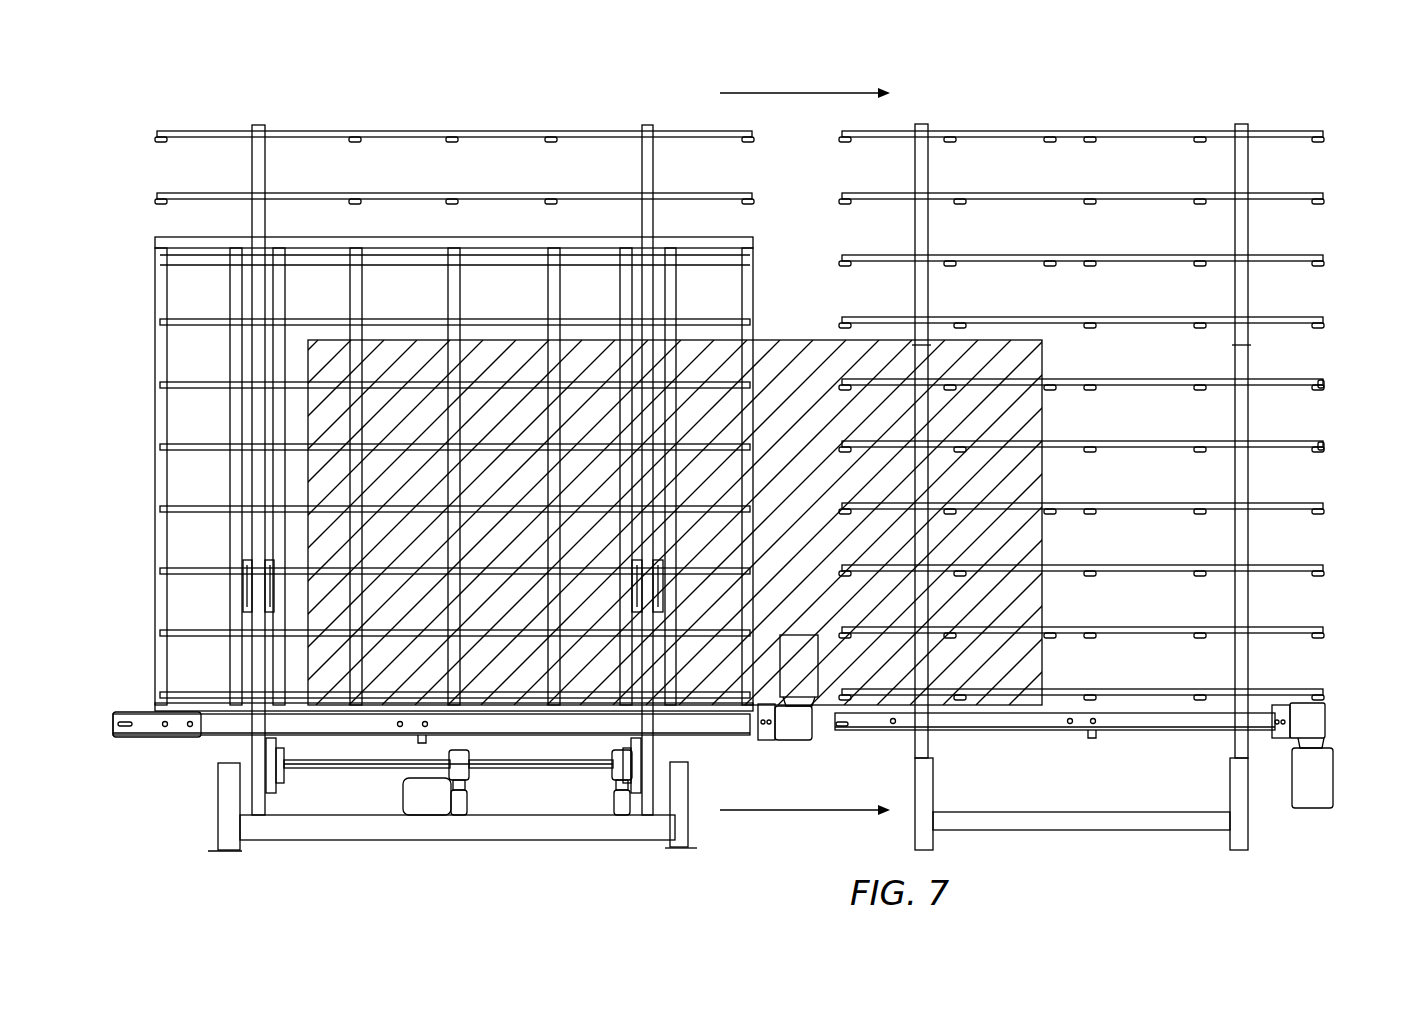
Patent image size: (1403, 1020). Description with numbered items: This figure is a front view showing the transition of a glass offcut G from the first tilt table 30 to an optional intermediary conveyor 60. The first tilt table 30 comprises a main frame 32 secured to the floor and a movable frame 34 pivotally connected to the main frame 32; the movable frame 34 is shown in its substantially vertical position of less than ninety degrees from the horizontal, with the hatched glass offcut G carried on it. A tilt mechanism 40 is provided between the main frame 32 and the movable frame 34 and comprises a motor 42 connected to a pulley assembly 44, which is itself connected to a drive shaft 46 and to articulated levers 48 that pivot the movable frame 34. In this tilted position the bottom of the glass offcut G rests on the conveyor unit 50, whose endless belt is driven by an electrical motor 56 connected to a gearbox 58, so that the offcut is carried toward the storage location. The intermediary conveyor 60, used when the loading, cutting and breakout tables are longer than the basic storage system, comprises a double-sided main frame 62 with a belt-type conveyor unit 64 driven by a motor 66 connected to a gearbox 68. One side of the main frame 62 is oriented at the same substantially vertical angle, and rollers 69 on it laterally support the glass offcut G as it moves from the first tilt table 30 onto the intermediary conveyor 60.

The first tilt table 30 is at (206, 120).
The main frame 32 is at (265, 838).
The movable frame 34 is at (162, 417).
The tilt mechanism 40 is at (575, 787).
The motor 42 is at (420, 795).
The pulley assembly 44 is at (452, 792).
The drive shaft 46 is at (515, 764).
The articulated levers 48 is at (260, 688).
The conveyor unit 50 is at (148, 738).
The electrical motor 56 is at (808, 665).
The gearbox 58 is at (790, 733).
The intermediary conveyor 60 is at (1038, 120).
The double-sided main frame 62 is at (1243, 128).
The belt-type conveyor unit 64 is at (1147, 745).
The motor 66 is at (1326, 778).
The gearbox 68 is at (1313, 718).
The rollers 69 is at (1326, 386).
The glass offcut G is at (697, 662).